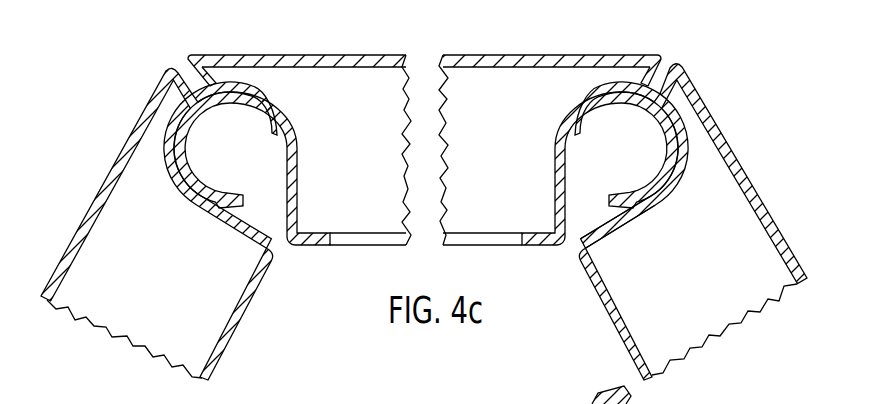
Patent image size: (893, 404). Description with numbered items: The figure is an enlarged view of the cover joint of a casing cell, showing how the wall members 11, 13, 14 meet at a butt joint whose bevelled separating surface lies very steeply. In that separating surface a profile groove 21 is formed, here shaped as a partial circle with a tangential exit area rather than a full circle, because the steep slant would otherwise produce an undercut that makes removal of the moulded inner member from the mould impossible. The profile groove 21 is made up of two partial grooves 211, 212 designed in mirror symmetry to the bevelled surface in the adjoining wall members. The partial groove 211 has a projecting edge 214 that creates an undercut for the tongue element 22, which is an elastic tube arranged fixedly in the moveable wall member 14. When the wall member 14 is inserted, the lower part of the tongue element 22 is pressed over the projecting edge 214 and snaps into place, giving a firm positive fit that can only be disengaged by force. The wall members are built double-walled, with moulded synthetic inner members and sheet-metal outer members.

The wall member 11 is at (377, 60).
The wall member 13 is at (738, 158).
The moveable wall member 14 is at (101, 188).
The profile groove 21 is at (238, 165).
The tongue element 22 is at (612, 104).
The partial groove 211 is at (570, 106).
The partial groove 212 is at (672, 192).
The projecting edge 214 is at (230, 65).